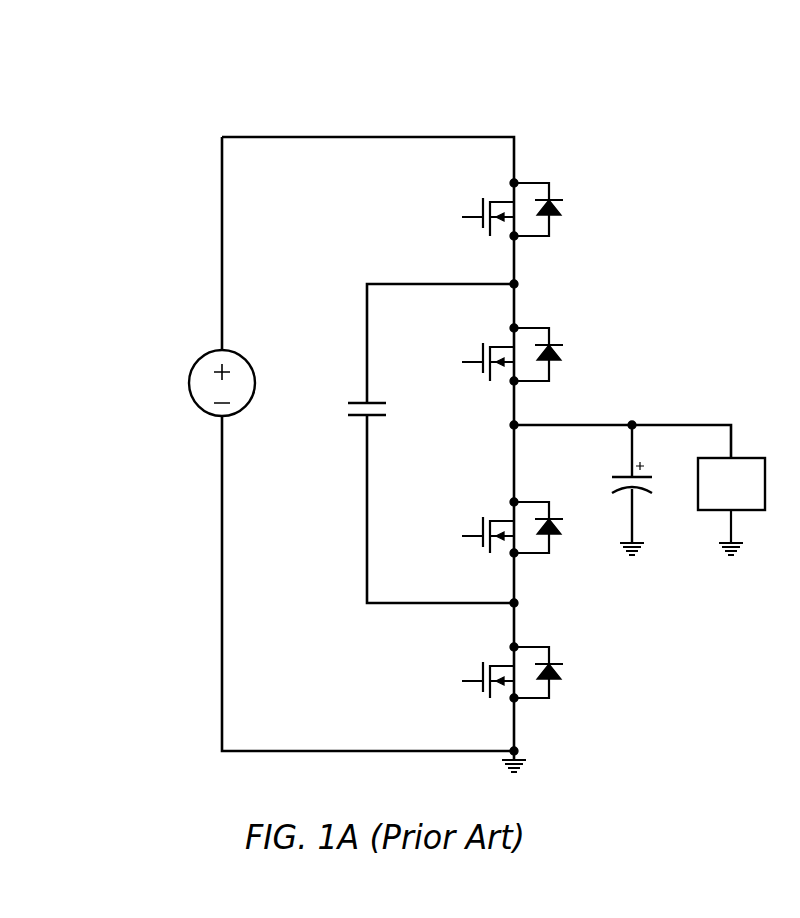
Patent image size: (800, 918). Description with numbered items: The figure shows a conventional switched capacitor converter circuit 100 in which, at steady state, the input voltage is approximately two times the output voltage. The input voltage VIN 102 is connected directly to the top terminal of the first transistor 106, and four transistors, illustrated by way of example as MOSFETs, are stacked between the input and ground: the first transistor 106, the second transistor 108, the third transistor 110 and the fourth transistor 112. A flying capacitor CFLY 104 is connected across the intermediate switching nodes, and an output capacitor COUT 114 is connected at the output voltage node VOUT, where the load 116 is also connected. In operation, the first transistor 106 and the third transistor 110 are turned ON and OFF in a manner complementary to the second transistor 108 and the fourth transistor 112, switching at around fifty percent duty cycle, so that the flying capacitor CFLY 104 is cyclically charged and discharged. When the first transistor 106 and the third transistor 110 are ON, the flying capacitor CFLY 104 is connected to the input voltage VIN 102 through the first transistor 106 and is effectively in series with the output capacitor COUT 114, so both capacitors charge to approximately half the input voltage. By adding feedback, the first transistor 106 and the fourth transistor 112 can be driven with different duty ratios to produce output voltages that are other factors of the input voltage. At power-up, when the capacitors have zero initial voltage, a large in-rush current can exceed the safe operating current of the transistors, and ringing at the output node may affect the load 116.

The switched capacitor converter circuit 100 is at (230, 71).
The input voltage VIN 102 is at (207, 350).
The flying capacitor CFLY 104 is at (360, 390).
The transistor Q1 106 is at (548, 178).
The transistor Q2 108 is at (521, 320).
The transistor Q3 110 is at (490, 492).
The transistor Q4 112 is at (472, 697).
The output capacitor COUT 114 is at (640, 505).
The load 116 is at (754, 508).